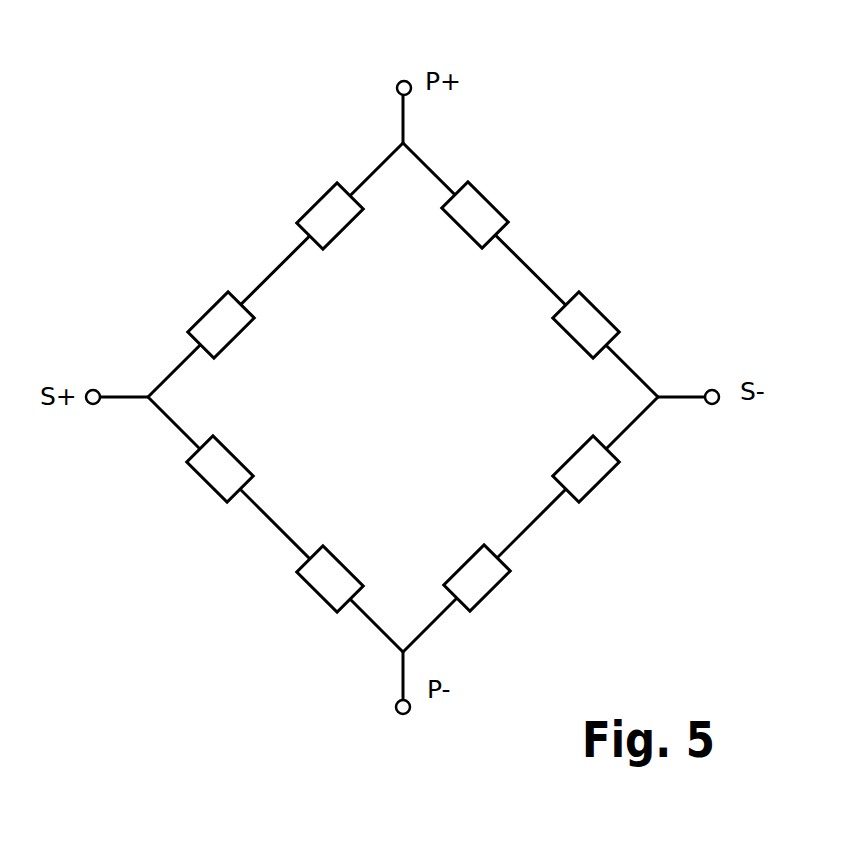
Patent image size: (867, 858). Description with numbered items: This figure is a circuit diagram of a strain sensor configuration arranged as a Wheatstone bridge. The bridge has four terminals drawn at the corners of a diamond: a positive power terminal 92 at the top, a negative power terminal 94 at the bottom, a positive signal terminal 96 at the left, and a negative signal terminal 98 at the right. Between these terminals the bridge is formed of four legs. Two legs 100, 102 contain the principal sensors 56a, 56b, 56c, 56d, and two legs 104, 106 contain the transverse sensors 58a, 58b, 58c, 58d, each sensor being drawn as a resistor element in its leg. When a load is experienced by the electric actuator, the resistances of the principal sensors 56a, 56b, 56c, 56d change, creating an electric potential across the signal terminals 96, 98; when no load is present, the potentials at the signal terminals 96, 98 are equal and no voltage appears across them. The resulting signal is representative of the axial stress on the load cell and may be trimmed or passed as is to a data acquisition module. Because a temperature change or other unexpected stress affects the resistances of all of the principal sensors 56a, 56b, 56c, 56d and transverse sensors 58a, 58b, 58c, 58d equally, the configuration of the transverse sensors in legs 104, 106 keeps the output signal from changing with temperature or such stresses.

The principal sensor 56a is at (325, 207).
The principal sensor 56b is at (590, 477).
The principal sensor 56c is at (202, 317).
The principal sensor 56d is at (485, 590).
The transverse sensor 58a is at (210, 478).
The transverse sensor 58b is at (478, 200).
The transverse sensor 58c is at (317, 593).
The transverse sensor 58d is at (595, 315).
The positive power terminal 92 is at (400, 81).
The negative power terminal 94 is at (405, 715).
The positive signal terminal 96 is at (95, 390).
The negative signal terminal 98 is at (712, 404).
The leg 100 is at (208, 224).
The leg 102 is at (650, 597).
The leg 104 is at (223, 580).
The leg 106 is at (631, 212).